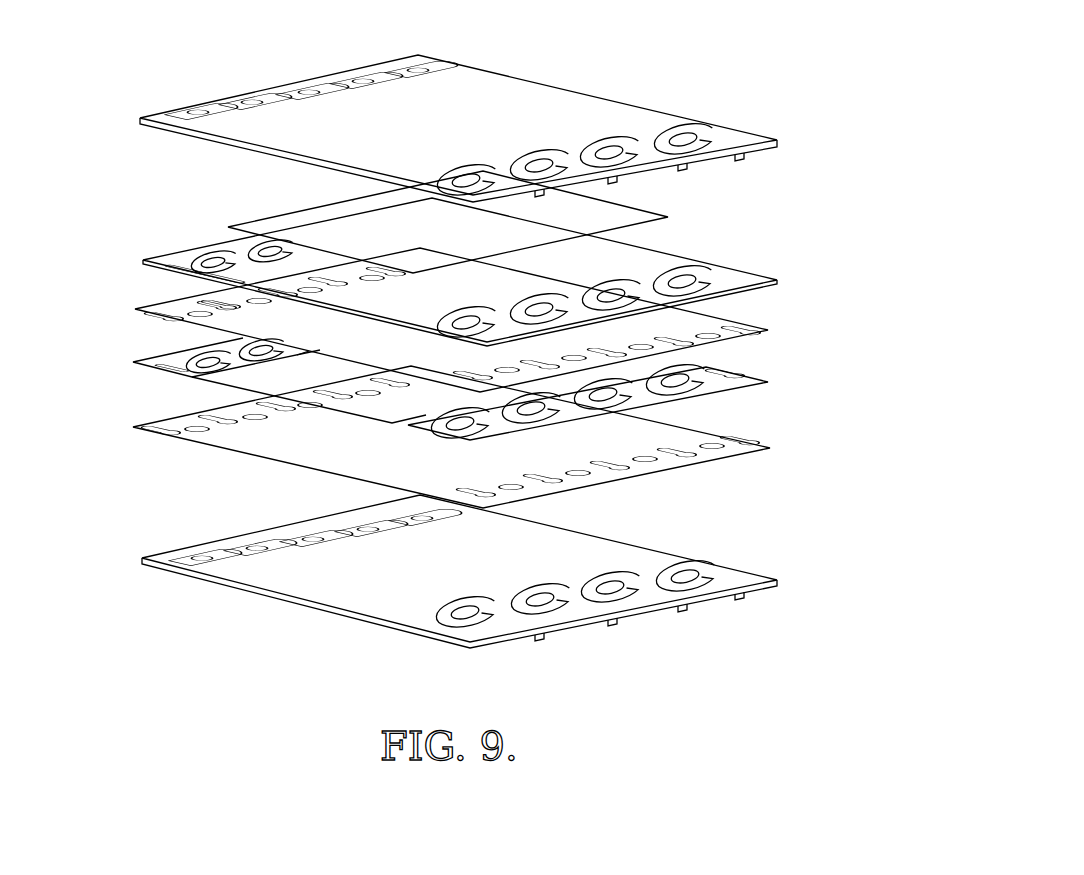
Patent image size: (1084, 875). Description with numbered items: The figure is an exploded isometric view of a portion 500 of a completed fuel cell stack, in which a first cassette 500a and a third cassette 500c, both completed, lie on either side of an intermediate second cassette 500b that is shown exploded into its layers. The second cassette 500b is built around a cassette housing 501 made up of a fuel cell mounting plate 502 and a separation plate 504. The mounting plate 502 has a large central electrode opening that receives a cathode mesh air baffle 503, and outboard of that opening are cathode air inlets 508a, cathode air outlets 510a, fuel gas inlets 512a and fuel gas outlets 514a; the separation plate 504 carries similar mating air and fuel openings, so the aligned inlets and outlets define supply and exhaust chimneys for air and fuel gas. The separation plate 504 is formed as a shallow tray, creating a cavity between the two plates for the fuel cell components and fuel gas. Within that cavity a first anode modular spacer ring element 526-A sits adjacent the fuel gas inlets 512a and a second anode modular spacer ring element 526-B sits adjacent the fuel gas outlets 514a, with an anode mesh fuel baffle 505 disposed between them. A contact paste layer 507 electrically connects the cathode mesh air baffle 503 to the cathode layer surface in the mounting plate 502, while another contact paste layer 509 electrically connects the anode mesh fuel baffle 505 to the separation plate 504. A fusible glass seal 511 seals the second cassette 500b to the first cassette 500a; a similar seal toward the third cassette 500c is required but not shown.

The portion of a completed fuel cell stack 500 is at (505, 343).
The first cassette 500a is at (798, 111).
The second cassette 500b is at (505, 343).
The third cassette 500c is at (643, 616).
The cassette housing 501 is at (641, 413).
The fuel cell mounting plate 502 is at (451, 284).
The cathode mesh air baffle 503 is at (668, 215).
The separation plate 504 is at (451, 437).
The anode mesh fuel baffle 505 is at (220, 388).
The contact paste layer 507 is at (292, 407).
The cathode air inlets 508a is at (327, 277).
The contact paste layer 509 is at (451, 440).
The cathode air outlets 510a is at (740, 330).
The fusible glass seal 511 is at (760, 266).
The fuel gas inlets 512a is at (259, 299).
The fuel gas outlets 514a is at (693, 327).
The first anode modular spacer ring element 526-A is at (134, 362).
The second anode modular spacer ring element 526-B is at (613, 429).